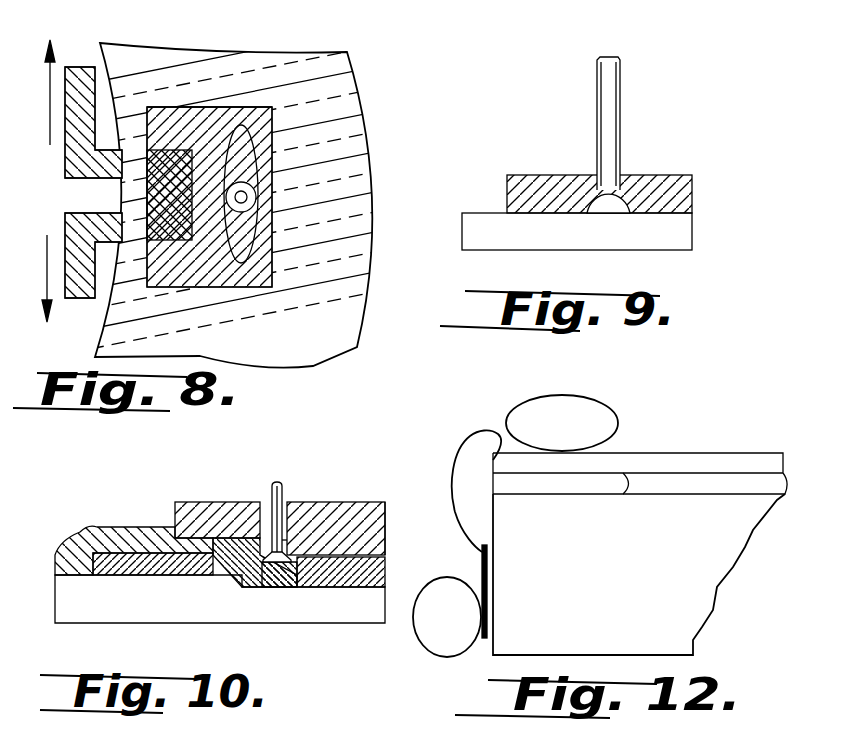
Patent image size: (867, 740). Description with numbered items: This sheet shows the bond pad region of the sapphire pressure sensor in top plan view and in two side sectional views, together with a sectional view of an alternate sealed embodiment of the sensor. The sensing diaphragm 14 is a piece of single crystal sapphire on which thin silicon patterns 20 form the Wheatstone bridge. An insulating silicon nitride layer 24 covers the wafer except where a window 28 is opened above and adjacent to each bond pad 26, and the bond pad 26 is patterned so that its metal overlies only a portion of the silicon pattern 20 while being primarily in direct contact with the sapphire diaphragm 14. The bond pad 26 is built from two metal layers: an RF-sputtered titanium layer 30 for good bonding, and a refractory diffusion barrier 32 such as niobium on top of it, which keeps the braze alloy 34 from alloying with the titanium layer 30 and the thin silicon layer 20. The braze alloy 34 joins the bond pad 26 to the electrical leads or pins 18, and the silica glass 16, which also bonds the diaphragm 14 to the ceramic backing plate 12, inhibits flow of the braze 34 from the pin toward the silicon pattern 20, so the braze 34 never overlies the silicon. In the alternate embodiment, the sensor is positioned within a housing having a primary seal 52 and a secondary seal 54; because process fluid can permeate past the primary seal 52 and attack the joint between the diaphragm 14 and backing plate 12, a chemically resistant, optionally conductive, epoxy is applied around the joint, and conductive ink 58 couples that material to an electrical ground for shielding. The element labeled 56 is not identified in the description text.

In FIG. 12, the backing plate 12 is at (705, 558).
In FIG. 9, the sensing diaphragm 14 is at (692, 230).
In FIG. 10, the sensing diaphragm 14 is at (180, 598).
In FIG. 12, the sensing diaphragm 14 is at (722, 453).
In FIG. 8, the silica glass 16 is at (355, 80).
In FIG. 9, the silica glass 16 is at (662, 175).
In FIG. 10, the silica glass 16 is at (345, 502).
In FIG. 12, the silica glass 16 is at (605, 482).
In FIG. 8, the electrical leads 18 is at (258, 212).
In FIG. 9, the electrical leads 18 is at (597, 112).
In FIG. 10, the electrical leads 18 is at (270, 492).
In FIG. 8, the silicon patterns 20 is at (93, 178).
In FIG. 10, the silicon patterns 20 is at (120, 577).
In FIG. 8, the silicon nitride layer 24 is at (345, 115).
In FIG. 10, the silicon nitride layer 24 is at (385, 521).
In FIG. 8, the bond pad 26 is at (238, 107).
In FIG. 8, the window 28 is at (345, 160).
In FIG. 10, the titanium layer 30 is at (262, 587).
In FIG. 10, the diffusion barrier 32 is at (285, 587).
In FIG. 8, the braze alloy 34 is at (256, 199).
In FIG. 9, the braze alloy 34 is at (607, 215).
In FIG. 10, the braze alloy 34 is at (284, 520).
In FIG. 12, the primary seal 52 is at (600, 398).
In FIG. 12, the secondary seal 54 is at (447, 633).
In FIG. 12, the flexible bag 56 is at (462, 447).
In FIG. 12, the conductive ink 58 is at (480, 568).